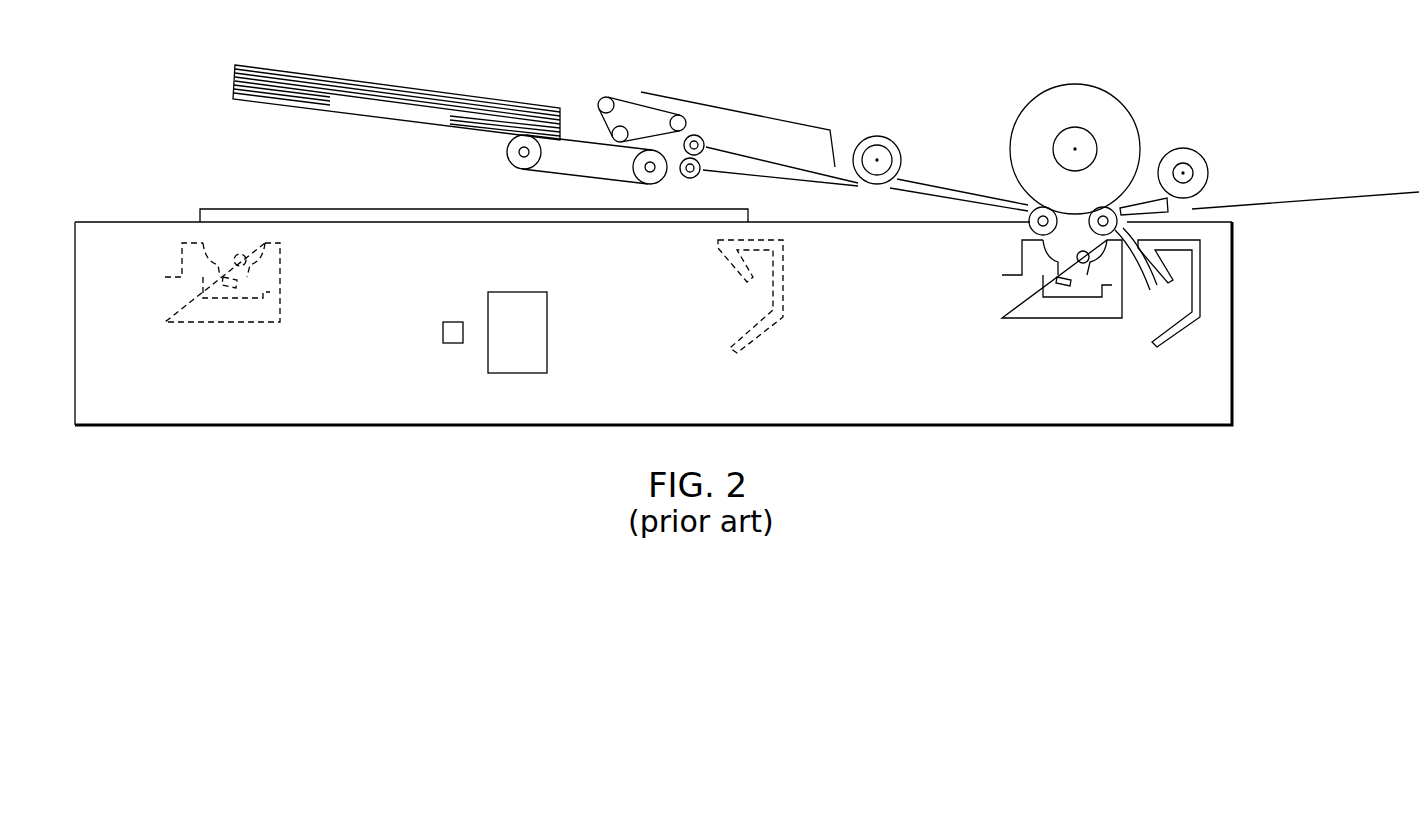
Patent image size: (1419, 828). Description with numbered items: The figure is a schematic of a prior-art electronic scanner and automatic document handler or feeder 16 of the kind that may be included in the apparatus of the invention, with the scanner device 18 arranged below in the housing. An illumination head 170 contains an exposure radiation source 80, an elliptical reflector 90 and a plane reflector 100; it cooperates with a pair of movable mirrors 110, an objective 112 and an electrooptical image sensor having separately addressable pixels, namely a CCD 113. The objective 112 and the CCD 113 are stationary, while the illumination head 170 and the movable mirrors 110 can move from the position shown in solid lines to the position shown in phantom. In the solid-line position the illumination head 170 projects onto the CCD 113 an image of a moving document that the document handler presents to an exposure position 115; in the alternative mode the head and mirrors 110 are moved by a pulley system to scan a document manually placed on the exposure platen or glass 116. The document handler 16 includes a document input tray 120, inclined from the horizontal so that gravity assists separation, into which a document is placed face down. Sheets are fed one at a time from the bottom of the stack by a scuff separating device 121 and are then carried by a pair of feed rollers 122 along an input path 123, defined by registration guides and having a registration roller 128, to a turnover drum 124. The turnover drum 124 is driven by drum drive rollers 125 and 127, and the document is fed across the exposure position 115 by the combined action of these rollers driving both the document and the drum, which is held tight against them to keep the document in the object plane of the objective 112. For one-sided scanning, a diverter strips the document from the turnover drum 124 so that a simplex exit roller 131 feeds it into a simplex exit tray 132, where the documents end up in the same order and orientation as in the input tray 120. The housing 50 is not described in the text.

The automatic document feeder 16 is at (810, 101).
The scanner device 18 is at (963, 372).
The printer housing 50 is at (1157, 408).
The exposure radiation source 80 is at (1063, 287).
The elliptical reflector 90 is at (1085, 265).
The plane reflector 100 is at (1052, 278).
The movable mirrors 110 is at (1175, 330).
The objective 112 is at (550, 350).
The CCD 113 is at (448, 343).
The exposure position 115 is at (1073, 226).
The exposure platen 116 is at (225, 208).
The document input tray 120 is at (338, 113).
The scuff separating device 121 is at (586, 121).
The feed rollers 122 is at (711, 138).
The input path 123 is at (820, 183).
The turnover drum 124 is at (1112, 107).
The drum drive roller 125 is at (1157, 287).
The drum drive roller 127 is at (1022, 228).
The registration roller 128 is at (890, 140).
The simplex exit roller 131 is at (1197, 152).
The simplex exit tray 132 is at (1378, 196).
The illumination head 170 is at (1123, 278).